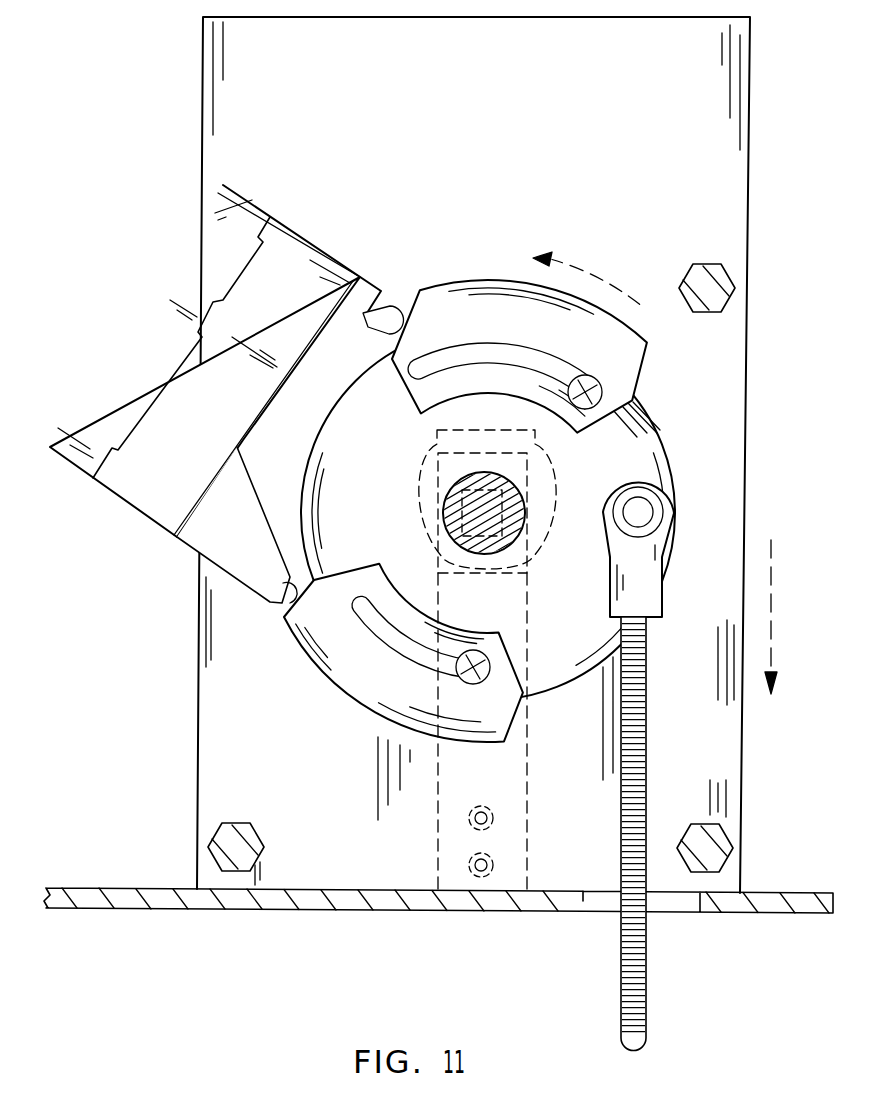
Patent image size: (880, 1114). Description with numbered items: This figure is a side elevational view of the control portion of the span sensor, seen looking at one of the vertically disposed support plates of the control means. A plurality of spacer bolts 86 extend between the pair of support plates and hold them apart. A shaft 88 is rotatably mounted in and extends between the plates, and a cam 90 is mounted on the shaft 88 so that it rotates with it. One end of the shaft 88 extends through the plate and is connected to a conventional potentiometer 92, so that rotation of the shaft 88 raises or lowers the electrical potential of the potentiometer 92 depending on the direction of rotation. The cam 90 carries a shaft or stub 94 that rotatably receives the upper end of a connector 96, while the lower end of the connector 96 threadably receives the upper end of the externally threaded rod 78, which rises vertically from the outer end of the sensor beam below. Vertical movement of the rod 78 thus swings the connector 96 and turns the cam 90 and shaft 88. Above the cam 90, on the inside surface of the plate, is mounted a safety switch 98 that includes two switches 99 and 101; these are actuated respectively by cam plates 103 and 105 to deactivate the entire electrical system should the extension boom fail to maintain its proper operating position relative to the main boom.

The externally threaded rod 78 is at (620, 962).
The spacer bolts 86 is at (730, 277).
The shaft 88 is at (513, 540).
The cam 90 is at (637, 442).
The potentiometer 92 is at (560, 487).
The stub 94 is at (655, 510).
The connector 96 is at (653, 560).
The safety switch 98 is at (300, 236).
The switch 99 is at (394, 303).
The switch 101 is at (286, 604).
The cam plate 103 is at (488, 292).
The cam plate 105 is at (370, 683).